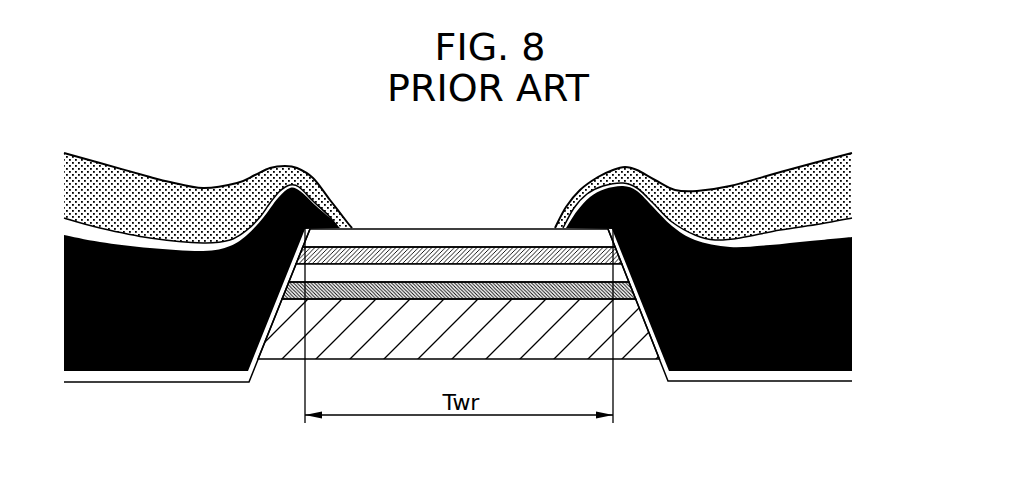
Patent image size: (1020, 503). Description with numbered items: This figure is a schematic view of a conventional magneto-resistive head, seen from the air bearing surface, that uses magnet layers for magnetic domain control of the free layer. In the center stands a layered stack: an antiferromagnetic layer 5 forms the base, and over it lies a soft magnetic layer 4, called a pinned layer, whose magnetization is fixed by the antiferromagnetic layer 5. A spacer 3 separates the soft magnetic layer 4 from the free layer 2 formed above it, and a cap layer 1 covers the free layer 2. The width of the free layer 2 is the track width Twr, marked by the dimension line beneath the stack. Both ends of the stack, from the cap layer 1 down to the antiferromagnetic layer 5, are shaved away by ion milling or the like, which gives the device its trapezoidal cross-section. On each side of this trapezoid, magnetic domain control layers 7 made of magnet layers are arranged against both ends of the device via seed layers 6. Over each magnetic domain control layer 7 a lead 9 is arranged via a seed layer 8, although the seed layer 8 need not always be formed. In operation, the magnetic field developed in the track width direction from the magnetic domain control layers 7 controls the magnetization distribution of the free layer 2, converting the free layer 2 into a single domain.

The cap layer 1 is at (412, 240).
The free layer 2 is at (447, 257).
The spacer 3 is at (478, 273).
The soft magnetic layer 4 is at (512, 293).
The antiferromagnetic layer 5 is at (390, 343).
The seed layers 6 is at (847, 374).
The magnetic domain control layers 7 is at (850, 338).
The seed layer 8 is at (845, 227).
The lead 9 is at (845, 191).